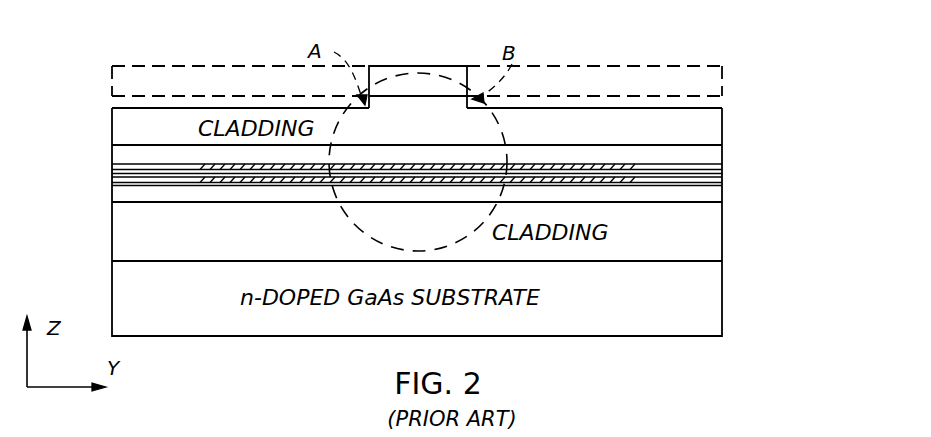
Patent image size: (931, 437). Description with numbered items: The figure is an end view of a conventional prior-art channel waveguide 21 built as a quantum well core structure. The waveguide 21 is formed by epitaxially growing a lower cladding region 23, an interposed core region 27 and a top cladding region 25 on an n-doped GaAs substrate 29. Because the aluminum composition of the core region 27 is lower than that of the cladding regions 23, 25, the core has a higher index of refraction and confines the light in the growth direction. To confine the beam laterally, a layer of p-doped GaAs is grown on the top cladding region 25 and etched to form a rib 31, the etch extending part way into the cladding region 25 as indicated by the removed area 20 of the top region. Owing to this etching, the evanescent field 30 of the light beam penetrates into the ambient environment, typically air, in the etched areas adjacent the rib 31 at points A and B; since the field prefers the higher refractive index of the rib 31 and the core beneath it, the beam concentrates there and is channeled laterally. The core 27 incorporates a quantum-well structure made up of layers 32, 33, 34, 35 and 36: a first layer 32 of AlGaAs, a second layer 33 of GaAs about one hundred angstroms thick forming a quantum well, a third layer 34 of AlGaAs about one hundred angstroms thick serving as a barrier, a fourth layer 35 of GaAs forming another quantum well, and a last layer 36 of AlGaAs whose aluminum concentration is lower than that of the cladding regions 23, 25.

The removed area of top cladding region 20 is at (733, 77).
The channel waveguide 21 is at (702, 54).
The cladding region 23 is at (716, 231).
The top cladding region 25 is at (722, 122).
The core region 27 is at (421, 182).
The n-doped GaAs substrate 29 is at (714, 296).
The evanescent field 30 is at (355, 243).
The rib 31 is at (437, 68).
The first layer 32 is at (118, 201).
The second layer 33 is at (112, 185).
The third layer 34 is at (116, 176).
The fourth layer 35 is at (120, 168).
The last layer 36 is at (120, 153).